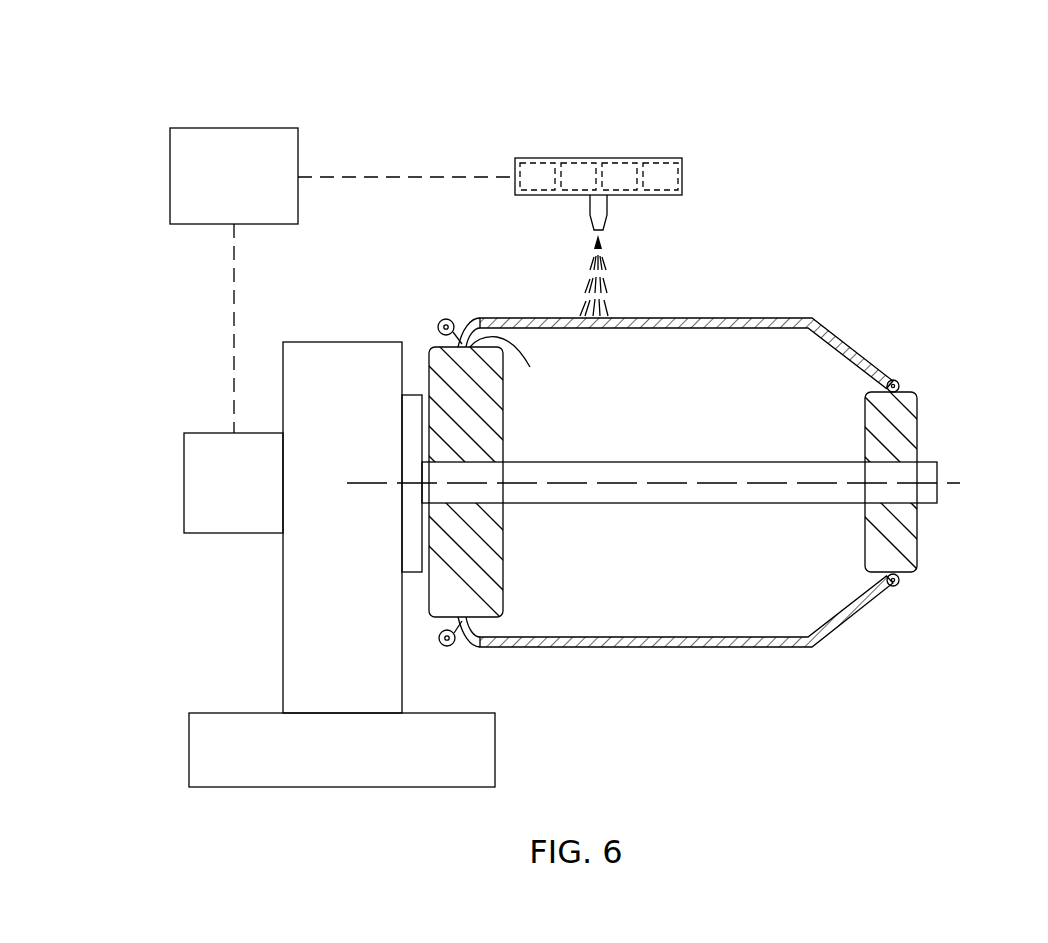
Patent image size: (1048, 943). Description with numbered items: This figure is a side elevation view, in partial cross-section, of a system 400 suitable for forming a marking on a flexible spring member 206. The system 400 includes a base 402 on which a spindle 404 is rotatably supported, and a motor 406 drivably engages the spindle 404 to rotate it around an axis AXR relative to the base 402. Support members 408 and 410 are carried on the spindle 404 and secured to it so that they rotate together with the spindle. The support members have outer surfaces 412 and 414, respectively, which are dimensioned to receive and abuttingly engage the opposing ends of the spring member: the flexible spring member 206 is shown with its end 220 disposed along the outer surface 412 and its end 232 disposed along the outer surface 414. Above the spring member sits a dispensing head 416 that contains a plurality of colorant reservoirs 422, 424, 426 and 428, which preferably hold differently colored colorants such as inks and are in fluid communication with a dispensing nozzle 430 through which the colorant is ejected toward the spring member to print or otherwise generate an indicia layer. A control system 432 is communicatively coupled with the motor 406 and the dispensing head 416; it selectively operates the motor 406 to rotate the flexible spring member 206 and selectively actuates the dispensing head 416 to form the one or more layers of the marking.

The system 400 is at (140, 347).
The base 402 is at (283, 632).
The spindle 404 is at (785, 462).
The motor 406 is at (184, 480).
The support member 408 is at (478, 563).
The support member 410 is at (878, 550).
The outer surface 412 is at (530, 367).
The outer surface 414 is at (908, 393).
The dispensing head 416 is at (654, 117).
The colorant reservoir 422 is at (538, 172).
The colorant reservoir 424 is at (580, 172).
The colorant reservoir 426 is at (618, 172).
The colorant reservoir 428 is at (660, 172).
The dispensing nozzle 430 is at (607, 205).
The control system 432 is at (170, 183).
The end 220 is at (477, 292).
The flexible spring member 206 is at (758, 312).
The end 232 is at (887, 342).
The axis AXR is at (663, 484).